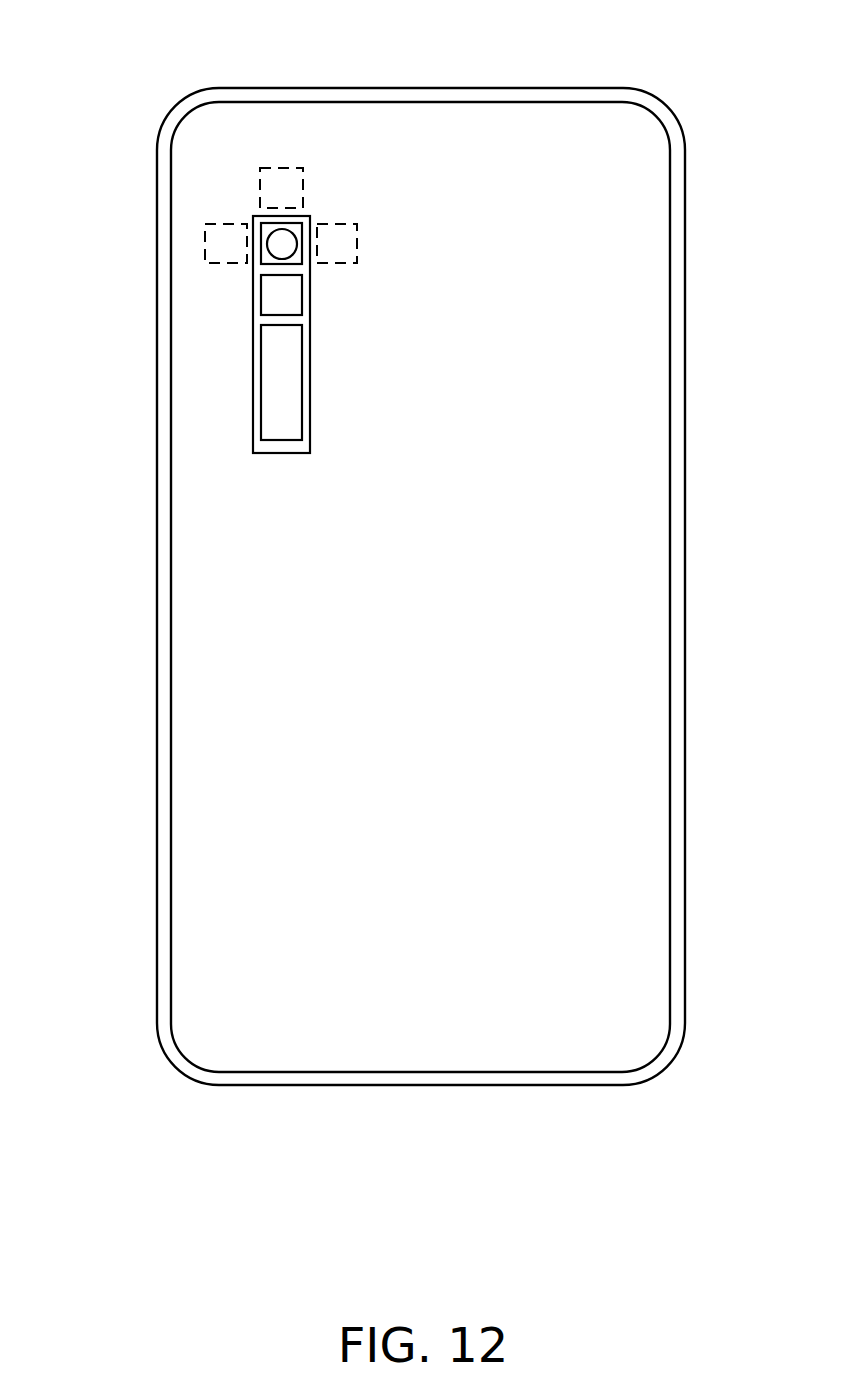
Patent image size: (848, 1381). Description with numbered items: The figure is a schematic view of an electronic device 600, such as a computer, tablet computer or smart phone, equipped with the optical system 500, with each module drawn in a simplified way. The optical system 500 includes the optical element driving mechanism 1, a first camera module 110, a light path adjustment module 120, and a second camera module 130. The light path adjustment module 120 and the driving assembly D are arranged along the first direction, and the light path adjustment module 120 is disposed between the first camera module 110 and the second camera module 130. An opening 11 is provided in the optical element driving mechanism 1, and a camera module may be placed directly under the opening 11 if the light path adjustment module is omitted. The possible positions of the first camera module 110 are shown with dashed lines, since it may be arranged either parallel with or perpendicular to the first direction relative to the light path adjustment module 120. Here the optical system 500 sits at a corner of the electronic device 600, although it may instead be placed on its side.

The electronic device 600 is at (93, 23).
The first camera module 110 is at (283, 167).
The optical element driving mechanism 1 is at (253, 420).
The optical system 500 is at (235, 383).
The opening 11 is at (270, 232).
The light path adjustment module 120 is at (261, 271).
The second camera module 130 is at (262, 300).
The driving assembly D is at (262, 349).